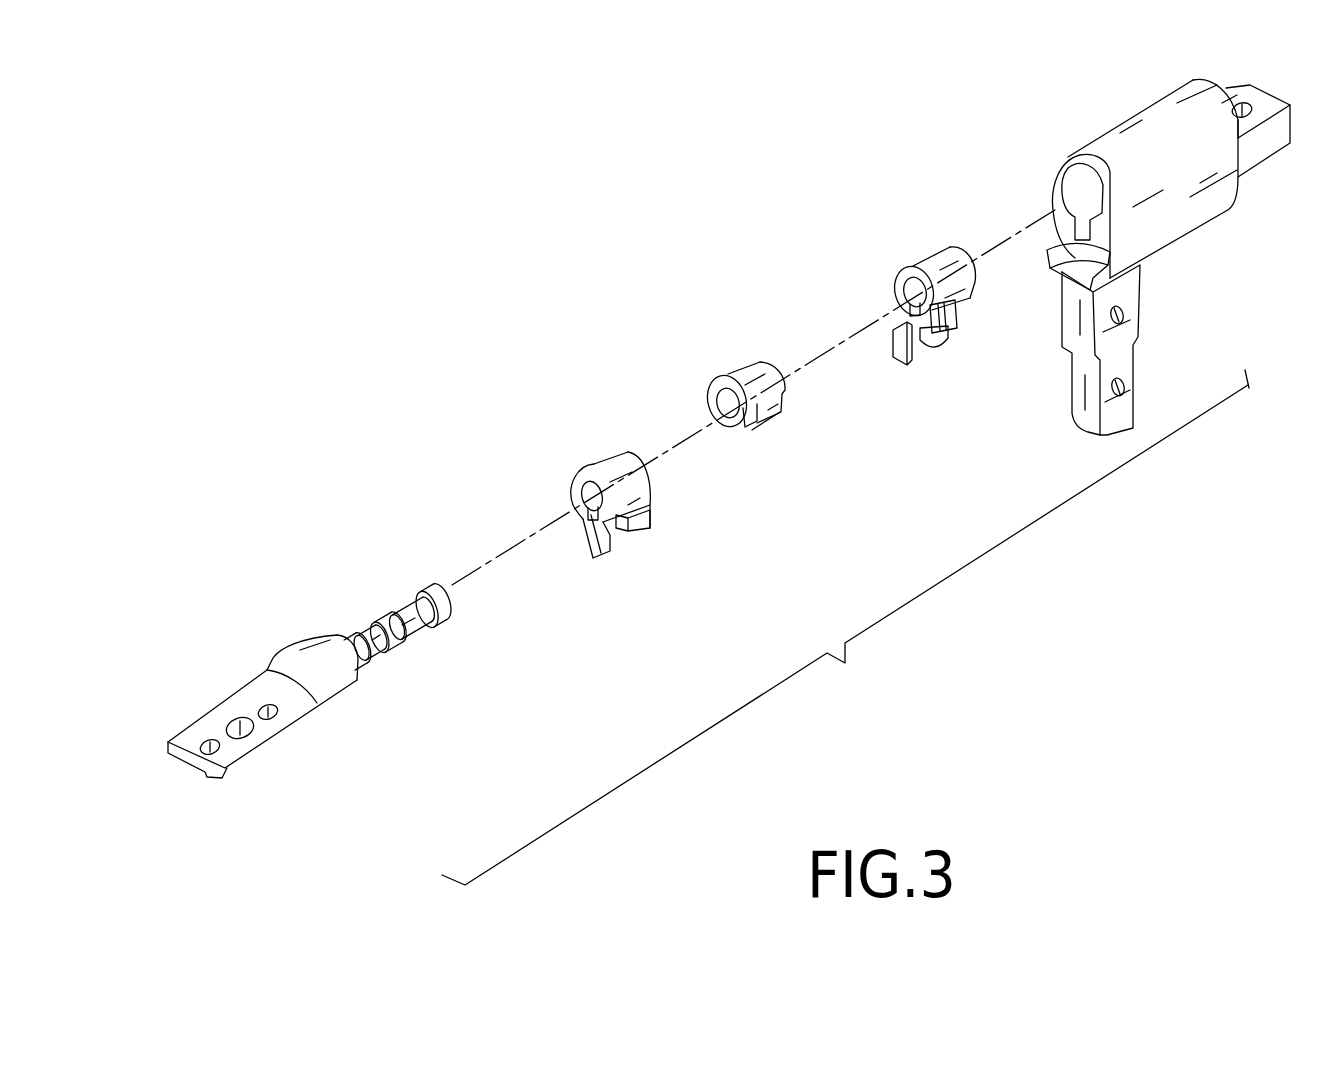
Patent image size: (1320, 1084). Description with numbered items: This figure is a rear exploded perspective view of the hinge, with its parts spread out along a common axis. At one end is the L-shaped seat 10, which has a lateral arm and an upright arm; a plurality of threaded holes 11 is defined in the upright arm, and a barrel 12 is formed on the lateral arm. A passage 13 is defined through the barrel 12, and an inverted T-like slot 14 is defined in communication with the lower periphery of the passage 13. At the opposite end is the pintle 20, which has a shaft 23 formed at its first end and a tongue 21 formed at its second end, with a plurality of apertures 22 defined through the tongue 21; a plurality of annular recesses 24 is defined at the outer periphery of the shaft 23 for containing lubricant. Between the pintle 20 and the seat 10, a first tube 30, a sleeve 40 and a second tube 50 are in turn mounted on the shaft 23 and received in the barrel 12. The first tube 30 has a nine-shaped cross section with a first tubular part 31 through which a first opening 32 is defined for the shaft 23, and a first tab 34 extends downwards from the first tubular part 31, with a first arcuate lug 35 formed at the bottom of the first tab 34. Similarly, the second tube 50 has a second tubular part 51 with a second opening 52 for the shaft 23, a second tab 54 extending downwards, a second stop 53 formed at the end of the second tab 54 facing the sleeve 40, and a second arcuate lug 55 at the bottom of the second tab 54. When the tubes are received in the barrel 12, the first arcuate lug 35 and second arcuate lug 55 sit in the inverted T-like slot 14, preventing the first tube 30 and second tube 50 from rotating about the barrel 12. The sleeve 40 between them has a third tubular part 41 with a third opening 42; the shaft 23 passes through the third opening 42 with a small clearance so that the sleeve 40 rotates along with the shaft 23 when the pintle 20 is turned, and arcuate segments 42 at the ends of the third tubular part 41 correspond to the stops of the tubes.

The L-shaped seat 10 is at (1088, 422).
The threaded holes 11 is at (1125, 313).
The barrel 12 is at (1173, 97).
The passage 13 is at (1063, 172).
The inverted T-like slot 14 is at (1062, 240).
The pintle 20 is at (302, 610).
The tongue 21 is at (242, 697).
The apertures 22 is at (230, 720).
The shaft 23 is at (408, 635).
The annular recesses 24 is at (417, 597).
The first tube 30 is at (580, 450).
The first tubular part 31 is at (643, 487).
The first opening 32 is at (587, 490).
The first tab 34 is at (602, 557).
The first arcuate lug 35 is at (618, 540).
The sleeve 40 is at (713, 342).
The third tubular part 41 is at (743, 380).
The third opening 42 is at (777, 363).
The second tube 50 is at (903, 240).
The second tubular part 51 is at (943, 252).
The second opening 52 is at (910, 287).
The second stop 53 is at (943, 304).
The second tab 54 is at (910, 362).
The second arcuate lug 55 is at (943, 347).